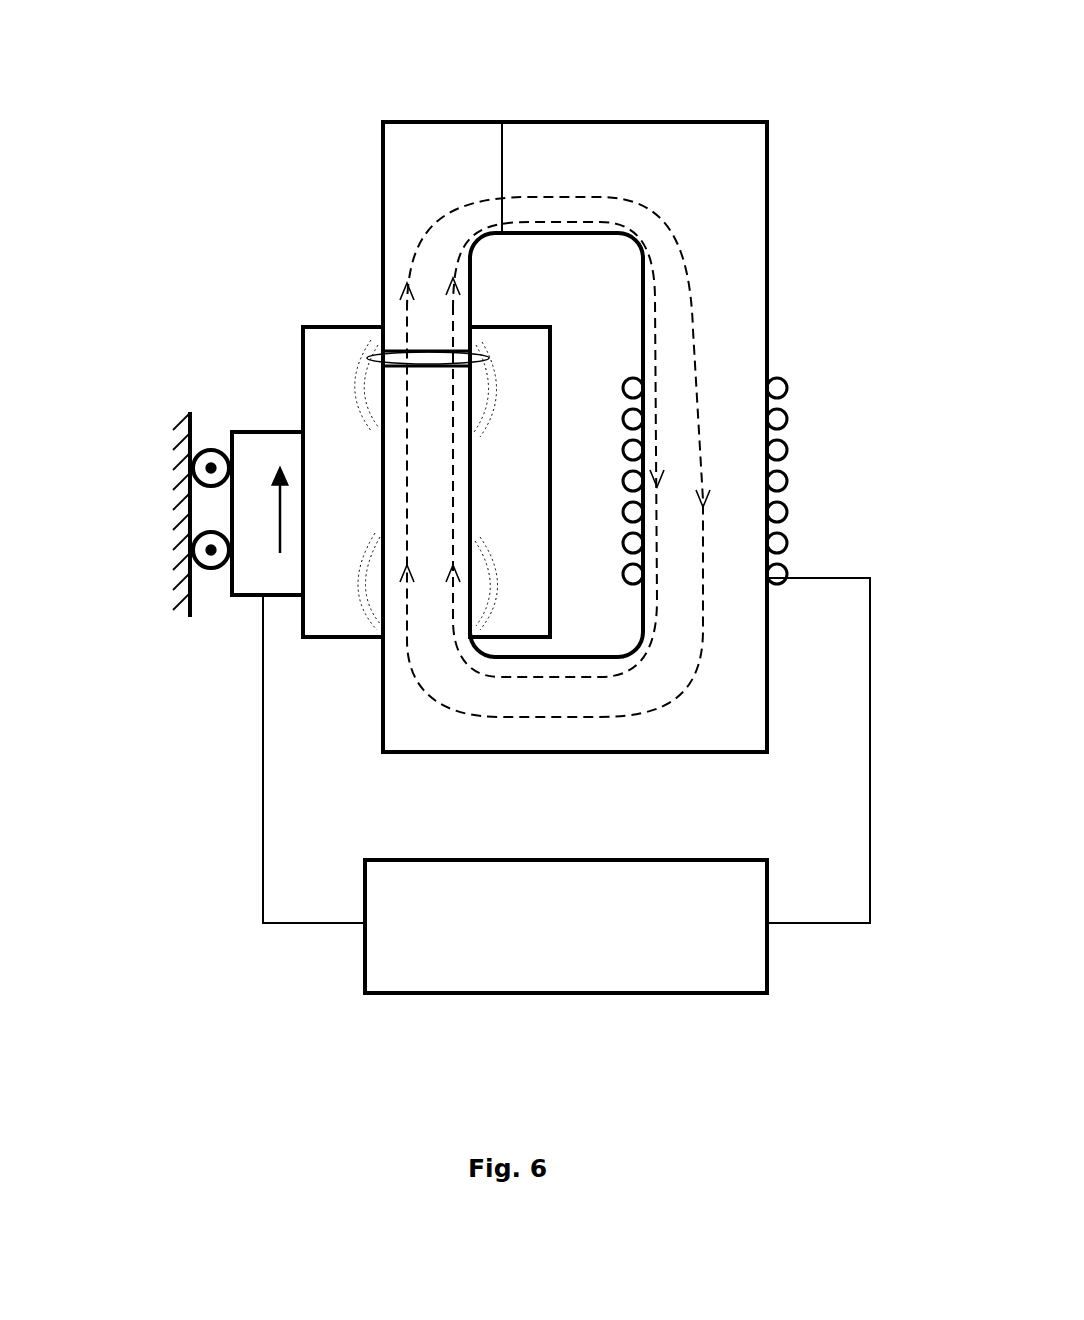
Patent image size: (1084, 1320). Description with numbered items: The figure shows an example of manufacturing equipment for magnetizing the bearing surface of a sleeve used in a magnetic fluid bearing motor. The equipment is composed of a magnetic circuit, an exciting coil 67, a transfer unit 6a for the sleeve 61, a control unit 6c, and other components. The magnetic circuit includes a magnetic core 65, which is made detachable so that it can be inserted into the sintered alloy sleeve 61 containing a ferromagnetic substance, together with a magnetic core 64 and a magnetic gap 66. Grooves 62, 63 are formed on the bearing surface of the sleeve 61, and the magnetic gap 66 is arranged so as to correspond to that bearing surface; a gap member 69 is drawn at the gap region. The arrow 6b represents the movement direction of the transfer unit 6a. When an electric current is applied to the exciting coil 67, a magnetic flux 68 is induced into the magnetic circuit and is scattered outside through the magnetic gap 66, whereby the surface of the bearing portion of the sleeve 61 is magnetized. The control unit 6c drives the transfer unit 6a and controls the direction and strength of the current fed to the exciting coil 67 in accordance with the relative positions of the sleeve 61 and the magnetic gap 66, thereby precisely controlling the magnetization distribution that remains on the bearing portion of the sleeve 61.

The sleeve 61 is at (327, 593).
The groove 62 is at (352, 407).
The groove 63 is at (365, 610).
The magnetic core 64 is at (727, 260).
The magnetic core 65 is at (428, 158).
The magnetic gap 66 is at (398, 340).
The exciting coil 67 is at (785, 380).
The magnetic flux 68 is at (560, 197).
The gap member 69 is at (417, 357).
The transfer unit 6a is at (262, 525).
The movement direction 6b is at (275, 475).
The control unit 6c is at (516, 934).